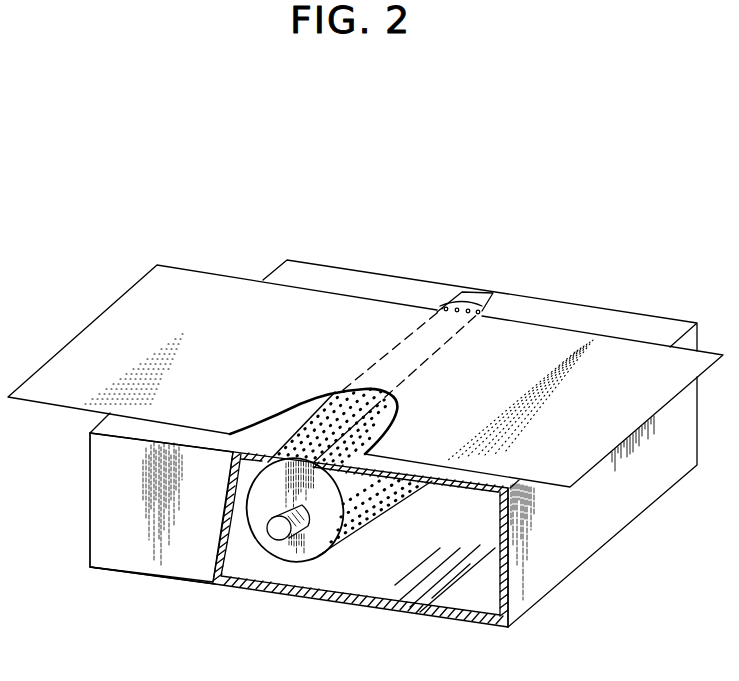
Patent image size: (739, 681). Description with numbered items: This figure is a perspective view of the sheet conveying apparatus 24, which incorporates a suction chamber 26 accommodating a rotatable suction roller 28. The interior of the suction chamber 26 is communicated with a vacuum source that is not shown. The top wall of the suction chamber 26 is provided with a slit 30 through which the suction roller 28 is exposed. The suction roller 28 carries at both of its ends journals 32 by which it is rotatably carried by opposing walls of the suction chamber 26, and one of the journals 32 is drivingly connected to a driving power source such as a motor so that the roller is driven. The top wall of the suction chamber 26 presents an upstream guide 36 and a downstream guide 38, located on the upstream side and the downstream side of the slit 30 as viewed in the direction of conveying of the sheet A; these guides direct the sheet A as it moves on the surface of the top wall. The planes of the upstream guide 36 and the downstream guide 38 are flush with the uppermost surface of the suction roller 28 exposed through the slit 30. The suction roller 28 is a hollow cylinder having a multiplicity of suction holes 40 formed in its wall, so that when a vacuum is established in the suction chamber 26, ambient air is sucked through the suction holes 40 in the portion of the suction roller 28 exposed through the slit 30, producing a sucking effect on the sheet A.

The sheet A is at (173, 278).
The sheet conveying apparatus 24 is at (193, 598).
The suction chamber 26 is at (563, 562).
The suction roller 28 is at (260, 513).
The slit 30 is at (490, 298).
The journals 32 is at (279, 540).
The upstream guide 36 is at (162, 434).
The downstream guide 38 is at (450, 476).
The suction holes 40 is at (314, 421).